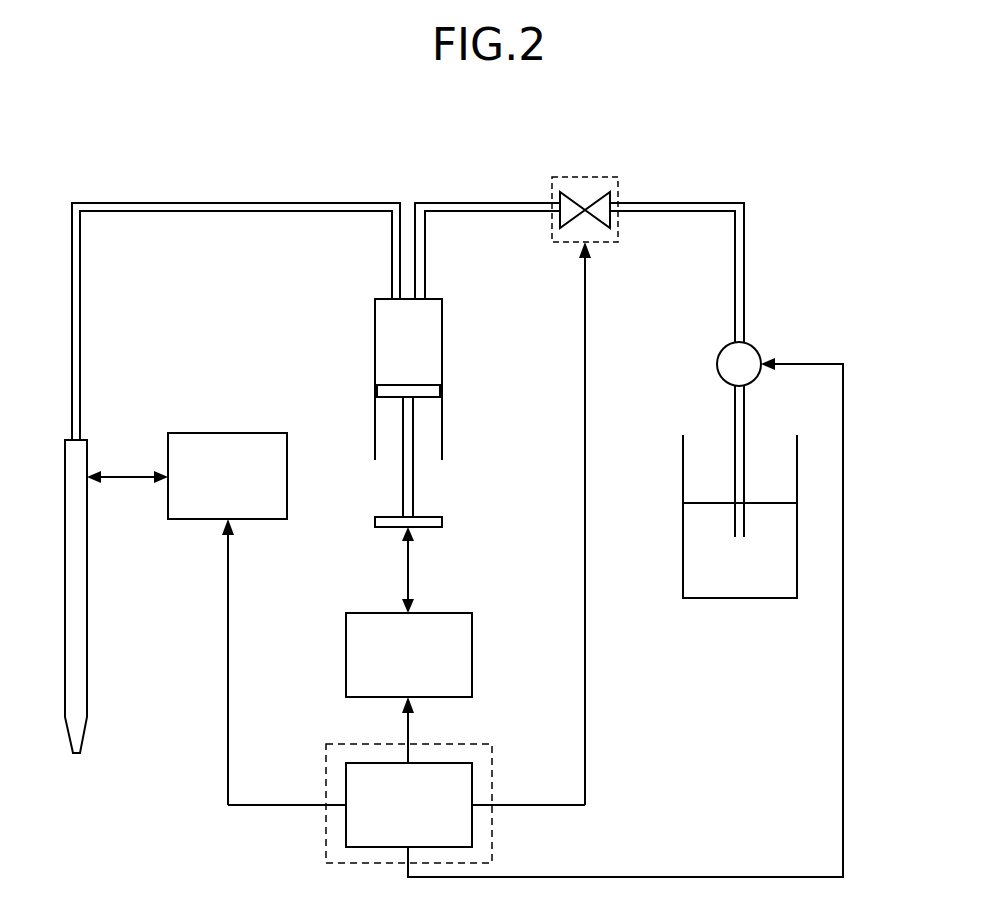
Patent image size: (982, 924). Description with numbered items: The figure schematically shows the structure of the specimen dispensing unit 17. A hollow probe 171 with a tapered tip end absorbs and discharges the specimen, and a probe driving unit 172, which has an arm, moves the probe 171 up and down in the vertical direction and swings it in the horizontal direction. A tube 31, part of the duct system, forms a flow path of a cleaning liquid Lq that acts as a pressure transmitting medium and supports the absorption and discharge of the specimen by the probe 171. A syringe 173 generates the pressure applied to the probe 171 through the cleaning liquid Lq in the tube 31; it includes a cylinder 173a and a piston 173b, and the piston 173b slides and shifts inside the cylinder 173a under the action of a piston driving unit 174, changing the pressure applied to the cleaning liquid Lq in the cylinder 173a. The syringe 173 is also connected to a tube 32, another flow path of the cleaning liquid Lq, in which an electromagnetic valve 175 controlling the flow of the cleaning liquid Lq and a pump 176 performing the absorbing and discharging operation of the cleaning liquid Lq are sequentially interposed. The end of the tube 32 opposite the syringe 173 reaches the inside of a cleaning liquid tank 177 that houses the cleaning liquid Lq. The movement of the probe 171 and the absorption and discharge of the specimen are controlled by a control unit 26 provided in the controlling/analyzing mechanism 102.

The specimen dispensing unit 17 is at (810, 242).
The tube 31 is at (230, 202).
The tube 32 is at (462, 202).
The electromagnetic valve 175 is at (585, 196).
The pump 176 is at (759, 347).
The cleaning liquid tank 177 is at (683, 485).
The cleaning liquid Lq is at (775, 598).
The syringe 173 is at (516, 335).
The cylinder 173a is at (442, 360).
The piston 173b is at (406, 423).
The probe 171 is at (88, 612).
The probe driving unit 172 is at (237, 433).
The piston driving unit 174 is at (472, 655).
The control unit 26 is at (472, 782).
The controlling/analyzing mechanism 102 is at (326, 830).